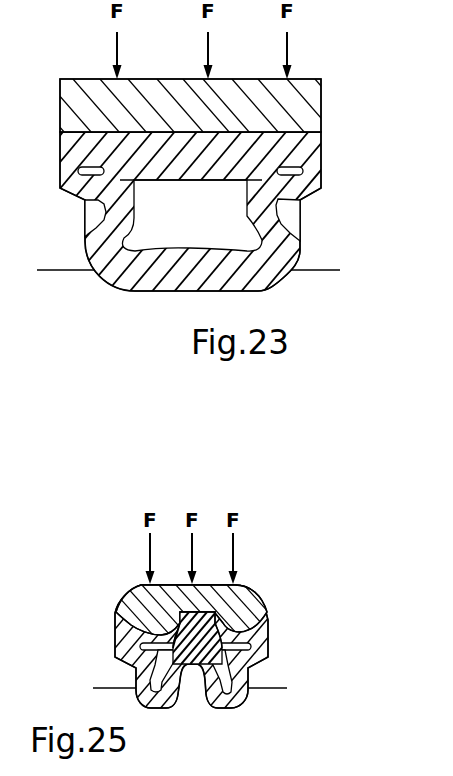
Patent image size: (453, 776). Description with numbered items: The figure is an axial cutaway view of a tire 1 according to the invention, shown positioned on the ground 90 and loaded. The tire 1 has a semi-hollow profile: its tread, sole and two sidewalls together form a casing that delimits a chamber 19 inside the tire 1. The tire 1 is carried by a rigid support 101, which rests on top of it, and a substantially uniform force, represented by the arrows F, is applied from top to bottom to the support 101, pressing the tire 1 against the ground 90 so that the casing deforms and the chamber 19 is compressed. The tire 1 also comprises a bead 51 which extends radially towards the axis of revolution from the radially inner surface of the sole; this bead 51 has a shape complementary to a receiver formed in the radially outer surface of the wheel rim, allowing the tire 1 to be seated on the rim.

In FIG. 23, the tire 1 is at (336, 163).
In FIG. 25, the tire 1 is at (290, 650).
In FIG. 23, the chamber 19 is at (187, 218).
In FIG. 25, the chamber 19 is at (225, 680).
In FIG. 25, the bead 51 is at (188, 618).
In FIG. 23, the ground 90 is at (58, 270).
In FIG. 25, the ground 90 is at (108, 688).
In FIG. 23, the rigid support 101 is at (50, 112).
In FIG. 25, the rigid support 101 is at (264, 599).